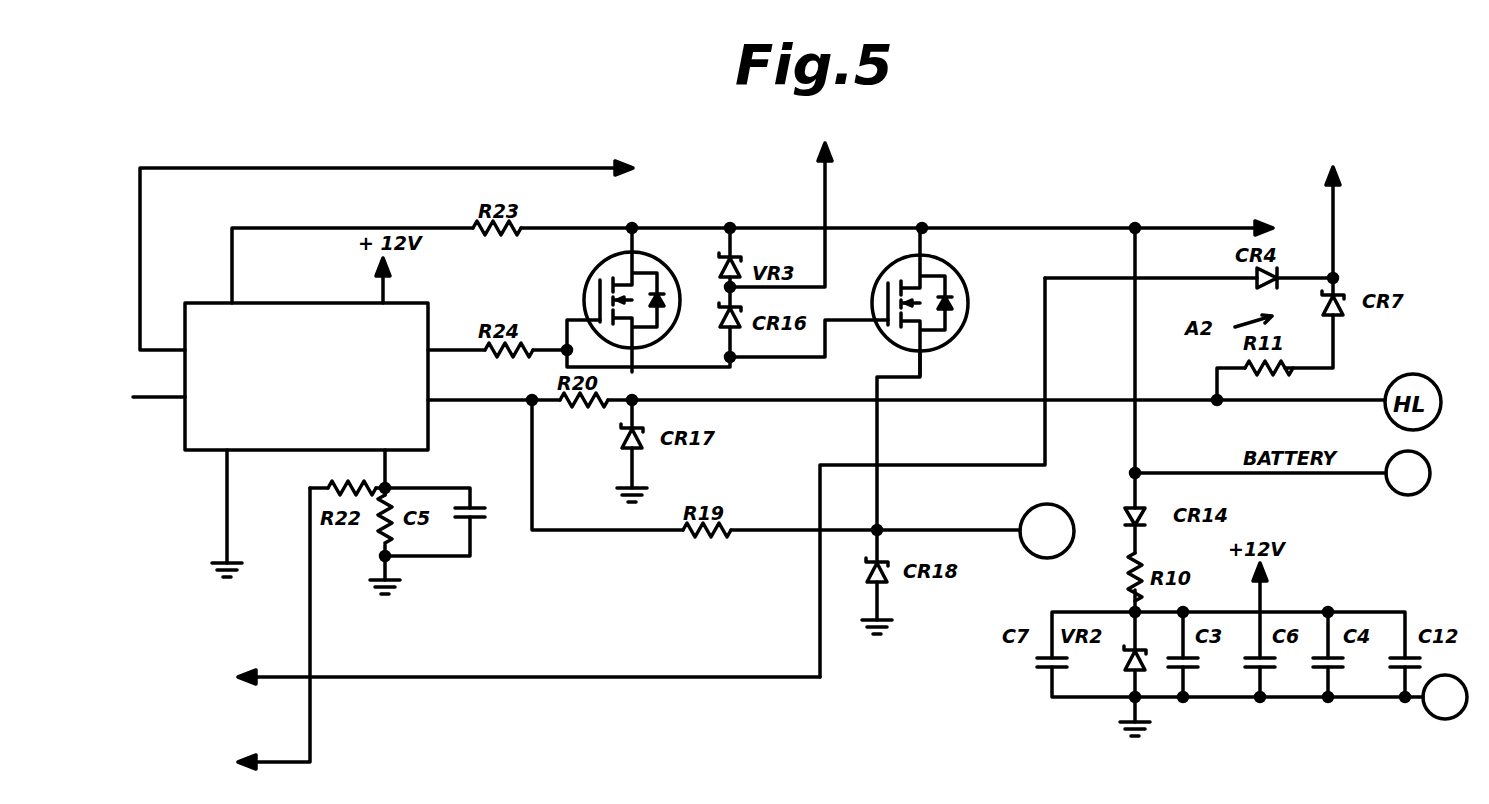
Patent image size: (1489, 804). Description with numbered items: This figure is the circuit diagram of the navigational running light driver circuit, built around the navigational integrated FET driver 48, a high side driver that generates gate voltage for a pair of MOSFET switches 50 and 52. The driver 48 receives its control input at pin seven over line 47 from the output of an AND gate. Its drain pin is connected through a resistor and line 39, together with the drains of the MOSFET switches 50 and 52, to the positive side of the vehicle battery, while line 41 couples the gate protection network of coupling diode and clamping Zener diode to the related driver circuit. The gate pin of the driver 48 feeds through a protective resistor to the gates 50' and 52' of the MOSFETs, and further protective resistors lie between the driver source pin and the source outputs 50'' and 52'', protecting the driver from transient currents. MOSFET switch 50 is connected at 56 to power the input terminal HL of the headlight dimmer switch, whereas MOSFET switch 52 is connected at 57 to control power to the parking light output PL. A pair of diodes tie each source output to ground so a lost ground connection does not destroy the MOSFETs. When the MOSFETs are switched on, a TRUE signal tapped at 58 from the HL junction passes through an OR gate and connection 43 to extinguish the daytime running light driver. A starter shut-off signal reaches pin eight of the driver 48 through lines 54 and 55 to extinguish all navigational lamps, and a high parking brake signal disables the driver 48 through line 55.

The connection line 39 is at (1044, 202).
The transient protection line 41 is at (830, 192).
The connection 43 is at (1338, 206).
The control input line 47 is at (362, 168).
The navigational integrated FET driver 48 is at (170, 436).
The MOSFET switch 50 is at (597, 300).
The gate of MOSFET switch 50 50' is at (514, 317).
The source output of MOSFET switch 50 50'' is at (648, 350).
The MOSFET switch 52 is at (940, 303).
The gate of MOSFET switch 52 52' is at (809, 357).
The source output of MOSFET switch 52 52'' is at (945, 436).
The shut-off signal line 54 is at (568, 677).
The disable line 55 is at (315, 650).
The headlight connection 56 is at (946, 408).
The parking light connection 57 is at (912, 530).
The headlight dimmer switch junction tap 58 is at (1213, 388).